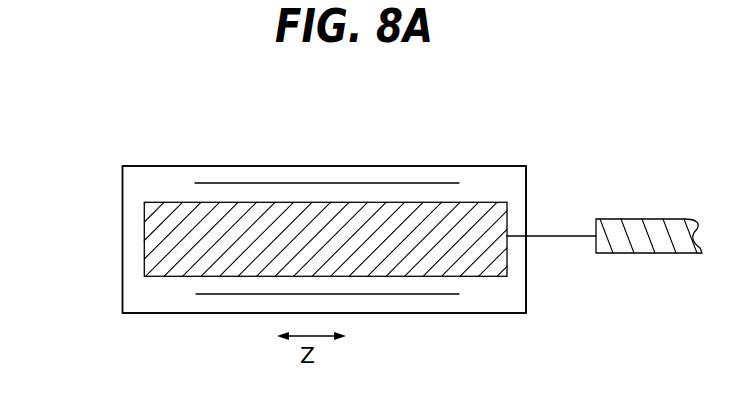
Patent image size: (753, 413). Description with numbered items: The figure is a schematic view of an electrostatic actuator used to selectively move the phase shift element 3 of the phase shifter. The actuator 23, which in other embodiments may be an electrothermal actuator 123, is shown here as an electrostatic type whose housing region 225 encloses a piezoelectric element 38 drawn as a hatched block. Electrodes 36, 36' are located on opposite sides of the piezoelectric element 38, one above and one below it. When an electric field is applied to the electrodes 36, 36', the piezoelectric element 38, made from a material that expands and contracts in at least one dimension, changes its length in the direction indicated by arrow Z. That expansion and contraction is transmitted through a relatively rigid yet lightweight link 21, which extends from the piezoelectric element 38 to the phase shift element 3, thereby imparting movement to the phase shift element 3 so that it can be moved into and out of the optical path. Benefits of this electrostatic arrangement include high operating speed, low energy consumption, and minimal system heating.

The actuator 23 is at (110, 284).
The electrothermal actuator 123 is at (505, 141).
The housing 225 is at (174, 152).
The electrode 36 is at (327, 145).
The electrode 36' is at (349, 343).
The piezoelectric element 38 is at (153, 224).
The link 21 is at (550, 237).
The phase shift element 3 is at (627, 228).